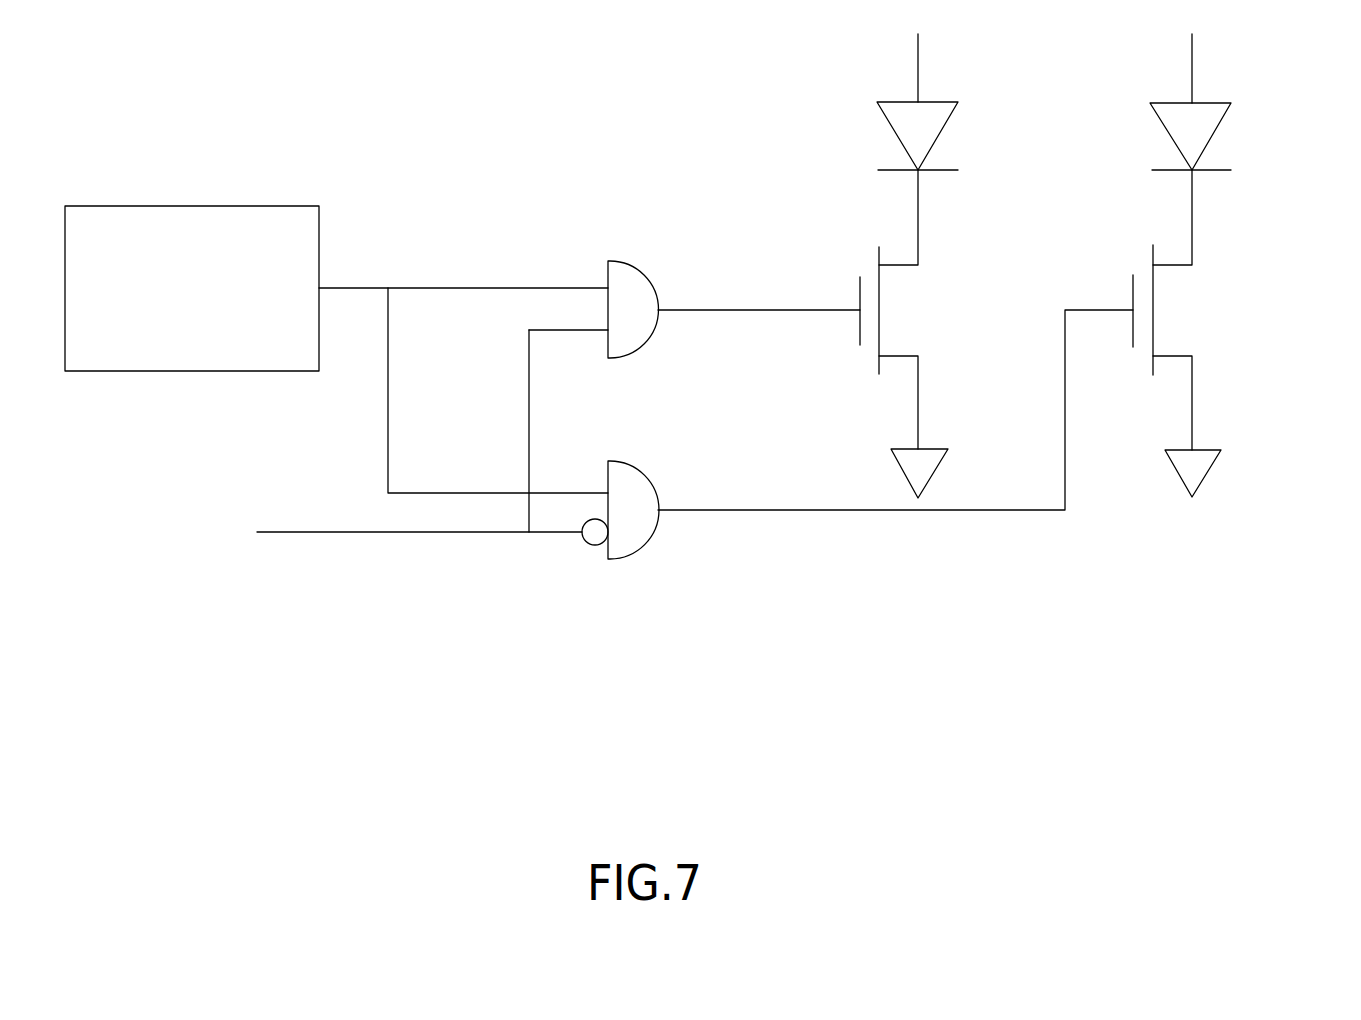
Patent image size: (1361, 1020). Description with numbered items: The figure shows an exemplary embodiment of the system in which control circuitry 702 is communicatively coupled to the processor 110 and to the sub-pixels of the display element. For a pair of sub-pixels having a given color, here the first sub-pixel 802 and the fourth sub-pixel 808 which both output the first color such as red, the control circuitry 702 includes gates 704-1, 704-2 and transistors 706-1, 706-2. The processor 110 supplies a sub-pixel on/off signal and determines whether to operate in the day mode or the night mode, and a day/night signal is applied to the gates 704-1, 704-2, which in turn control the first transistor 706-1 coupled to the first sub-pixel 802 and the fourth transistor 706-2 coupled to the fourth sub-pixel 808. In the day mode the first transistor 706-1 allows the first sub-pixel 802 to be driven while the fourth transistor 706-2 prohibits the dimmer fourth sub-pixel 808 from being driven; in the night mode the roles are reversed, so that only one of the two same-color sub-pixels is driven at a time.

The processor 110 is at (108, 233).
The control circuitry 702 is at (395, 160).
The gate 704-1 is at (643, 345).
The gate 704-2 is at (643, 545).
The first transistor 706-1 is at (879, 307).
The fourth transistor 706-2 is at (1153, 307).
The first sub-pixel 802 is at (990, 101).
The fourth sub-pixel 808 is at (1262, 101).